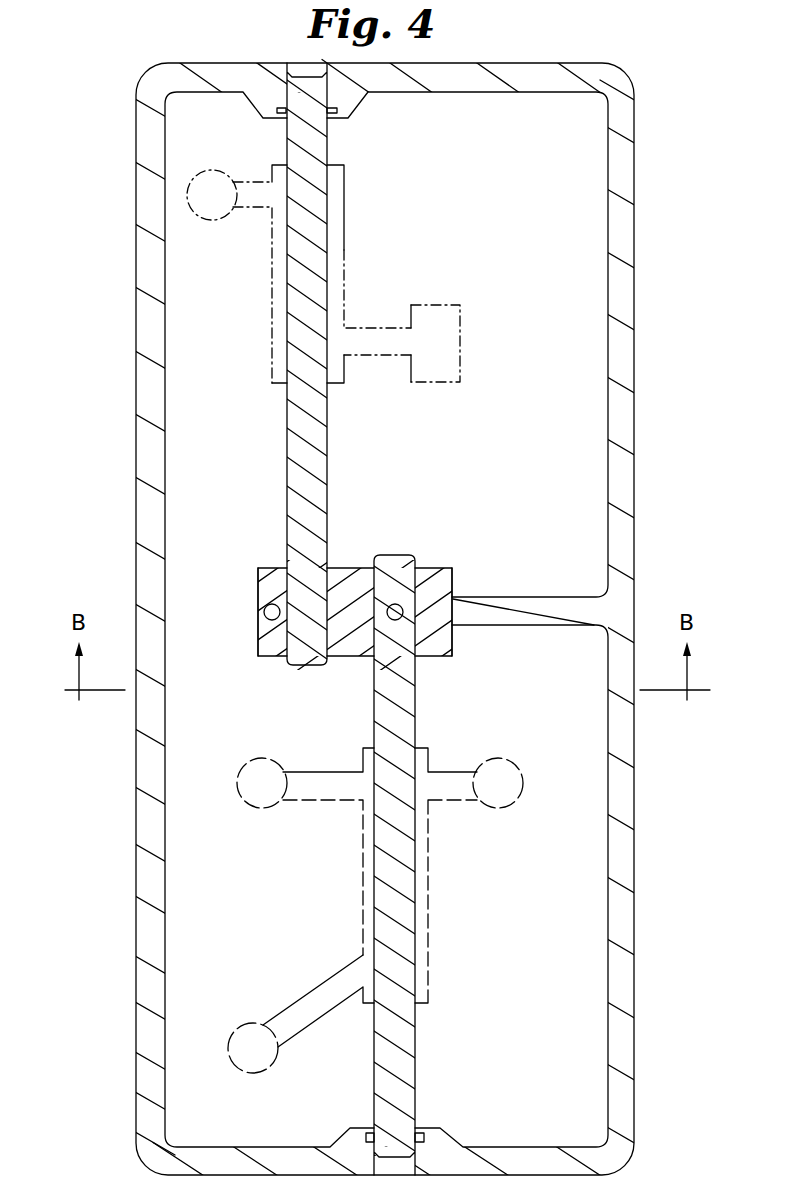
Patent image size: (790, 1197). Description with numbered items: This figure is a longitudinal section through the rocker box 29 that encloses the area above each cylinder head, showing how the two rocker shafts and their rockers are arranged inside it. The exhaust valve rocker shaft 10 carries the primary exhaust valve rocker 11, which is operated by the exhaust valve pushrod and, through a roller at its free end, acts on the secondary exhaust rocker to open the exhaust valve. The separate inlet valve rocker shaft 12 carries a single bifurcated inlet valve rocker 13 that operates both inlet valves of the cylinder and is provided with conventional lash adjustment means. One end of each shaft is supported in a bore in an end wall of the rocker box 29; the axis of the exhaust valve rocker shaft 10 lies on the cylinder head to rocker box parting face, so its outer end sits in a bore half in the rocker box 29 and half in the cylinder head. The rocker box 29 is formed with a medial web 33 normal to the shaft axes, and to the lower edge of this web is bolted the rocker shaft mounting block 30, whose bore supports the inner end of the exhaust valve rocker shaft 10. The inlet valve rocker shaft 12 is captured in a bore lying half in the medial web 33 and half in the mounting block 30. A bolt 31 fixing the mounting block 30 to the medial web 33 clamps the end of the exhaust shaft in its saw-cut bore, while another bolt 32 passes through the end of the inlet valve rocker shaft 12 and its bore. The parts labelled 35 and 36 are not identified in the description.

The exhaust valve rocker shaft 10 is at (295, 268).
The primary exhaust valve rocker 11 is at (254, 182).
The inlet valve rocker shaft 12 is at (378, 884).
The inlet valve rocker 13 is at (330, 777).
The rocker box 29 is at (124, 378).
The rocker shaft mounting block 30 is at (357, 568).
The bolt 31 is at (256, 612).
The bolt 32 is at (394, 590).
The medial web 33 is at (562, 594).
The coupling hub end 35 is at (262, 582).
The coupling hub end 36 is at (424, 603).